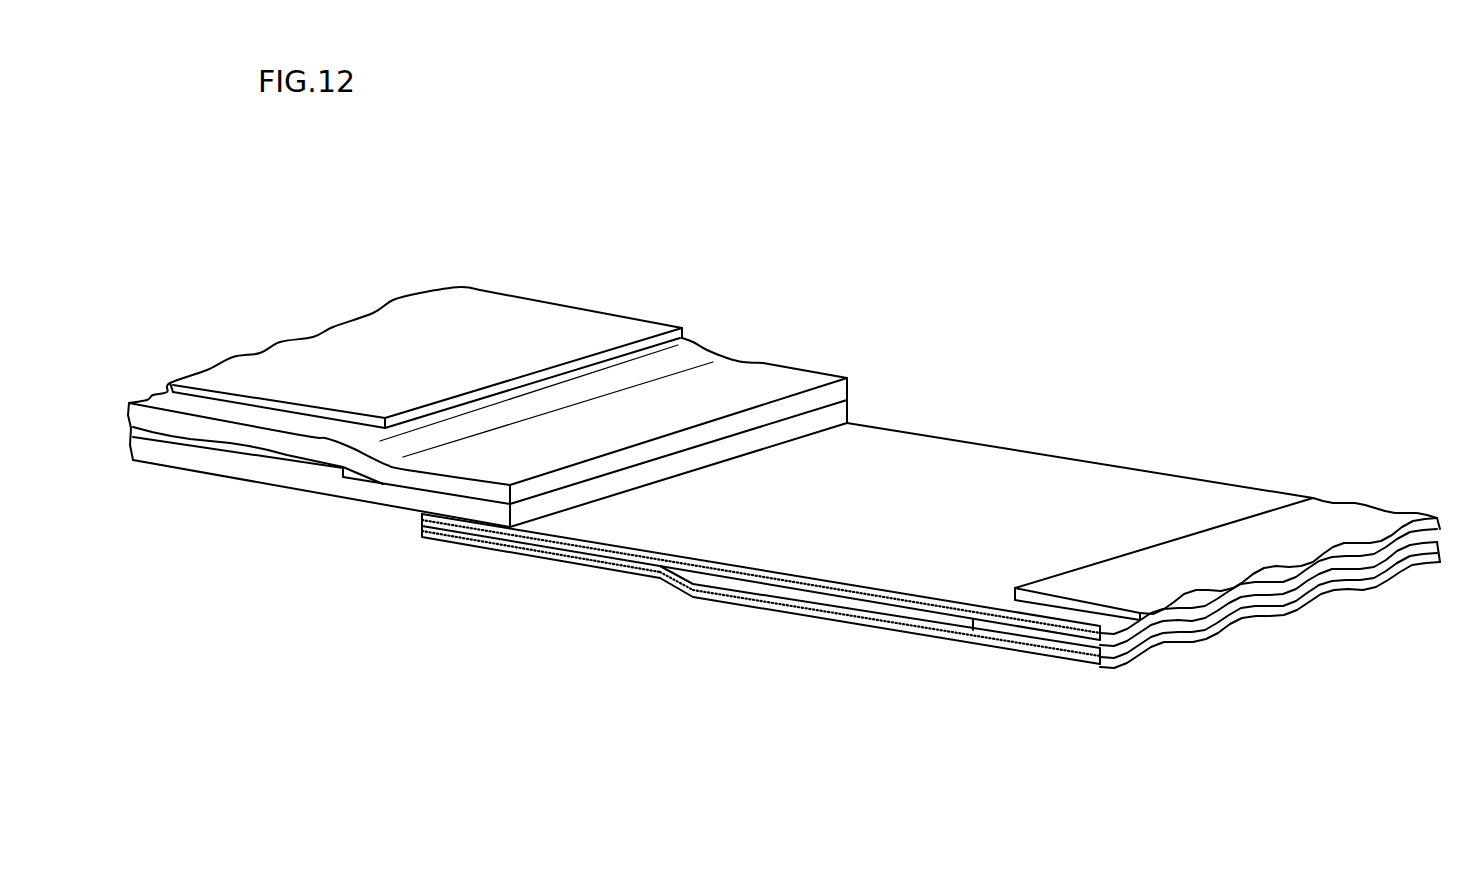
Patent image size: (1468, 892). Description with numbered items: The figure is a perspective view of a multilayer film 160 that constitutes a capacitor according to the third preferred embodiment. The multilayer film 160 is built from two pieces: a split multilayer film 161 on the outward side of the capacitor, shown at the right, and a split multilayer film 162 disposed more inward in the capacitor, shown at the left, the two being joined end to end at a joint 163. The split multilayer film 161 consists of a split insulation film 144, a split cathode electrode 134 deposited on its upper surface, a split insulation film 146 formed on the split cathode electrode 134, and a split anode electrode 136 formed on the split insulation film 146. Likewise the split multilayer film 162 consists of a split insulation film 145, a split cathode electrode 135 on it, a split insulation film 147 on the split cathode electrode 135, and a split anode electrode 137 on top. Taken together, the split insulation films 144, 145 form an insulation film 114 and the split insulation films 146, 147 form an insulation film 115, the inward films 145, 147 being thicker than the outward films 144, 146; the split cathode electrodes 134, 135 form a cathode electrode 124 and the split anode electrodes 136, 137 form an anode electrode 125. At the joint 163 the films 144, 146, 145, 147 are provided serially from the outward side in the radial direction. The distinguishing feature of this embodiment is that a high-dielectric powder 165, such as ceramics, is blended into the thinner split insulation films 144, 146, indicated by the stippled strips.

The multilayer film 160 is at (905, 197).
The split multilayer film 161 is at (1120, 382).
The split multilayer film 162 is at (615, 257).
The joint 163 is at (778, 246).
The insulation film 114 is at (616, 591).
The insulation film 115 is at (828, 463).
The cathode electrode 124 is at (784, 574).
The anode electrode 125 is at (784, 418).
The split cathode electrode 134 is at (1113, 643).
The split cathode electrode 135 is at (292, 459).
The split anode electrode 136 is at (1342, 521).
The split anode electrode 137 is at (527, 328).
The split insulation film 144 is at (457, 533).
The split insulation film 145 is at (404, 494).
The split insulation film 146 is at (540, 617).
The split insulation film 147 is at (558, 597).
The high-dielectric powder 165 is at (715, 596).